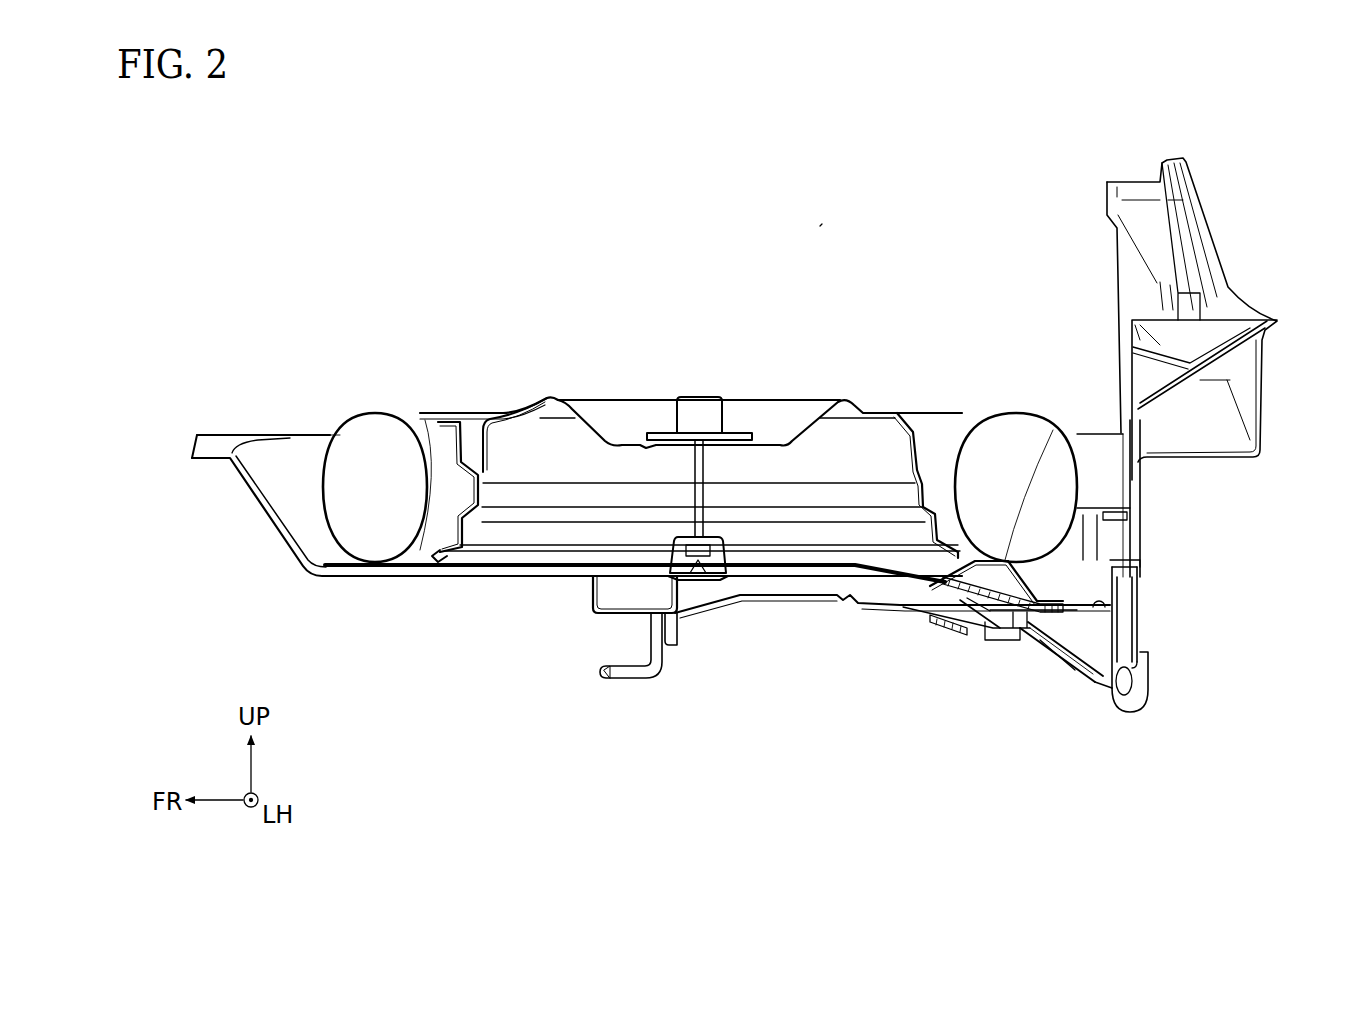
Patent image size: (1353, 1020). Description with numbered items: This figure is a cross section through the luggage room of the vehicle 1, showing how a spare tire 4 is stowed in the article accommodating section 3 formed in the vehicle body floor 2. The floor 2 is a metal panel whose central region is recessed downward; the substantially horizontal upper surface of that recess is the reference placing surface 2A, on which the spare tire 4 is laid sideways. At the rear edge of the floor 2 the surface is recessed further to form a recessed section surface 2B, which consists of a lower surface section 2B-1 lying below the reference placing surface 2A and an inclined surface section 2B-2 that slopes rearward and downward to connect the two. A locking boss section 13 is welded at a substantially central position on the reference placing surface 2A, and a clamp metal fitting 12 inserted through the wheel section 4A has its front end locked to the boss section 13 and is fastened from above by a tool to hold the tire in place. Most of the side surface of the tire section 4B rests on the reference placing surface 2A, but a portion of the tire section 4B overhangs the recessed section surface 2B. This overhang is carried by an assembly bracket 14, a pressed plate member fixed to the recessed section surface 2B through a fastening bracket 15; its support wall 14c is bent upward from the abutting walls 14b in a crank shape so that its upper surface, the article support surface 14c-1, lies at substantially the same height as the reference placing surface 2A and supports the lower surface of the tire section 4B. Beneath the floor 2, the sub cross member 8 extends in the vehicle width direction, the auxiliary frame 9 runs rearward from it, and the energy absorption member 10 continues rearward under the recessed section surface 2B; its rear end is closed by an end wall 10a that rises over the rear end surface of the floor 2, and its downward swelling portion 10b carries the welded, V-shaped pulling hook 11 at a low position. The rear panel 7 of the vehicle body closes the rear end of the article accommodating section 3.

The vehicle 1 is at (822, 224).
The vehicle body floor 2 is at (516, 568).
The reference placing surface 2A is at (437, 556).
The recessed section surface 2B is at (1090, 602).
The lower surface section 2B-1 is at (1085, 672).
The inclined surface section 2B-2 is at (968, 600).
The article accommodating section 3 is at (298, 462).
The spare tire 4 is at (962, 409).
The wheel section 4A is at (870, 407).
The tire section 4B is at (1010, 413).
The rear panel 7 is at (1232, 302).
The sub cross member 8 is at (605, 632).
The auxiliary frame 9 is at (805, 603).
The energy absorption member 10 is at (1010, 640).
The end wall 10a is at (1117, 595).
The swelling portion 10b is at (1055, 645).
The pulling hook 11 is at (1146, 655).
The clamp metal fitting 12 is at (725, 440).
The locking boss section 13 is at (680, 548).
The assembly bracket 14 is at (1043, 572).
The abutting wall 14b is at (1055, 600).
The support wall 14c is at (988, 557).
The article support surface 14c-1 is at (1013, 558).
The fastening bracket 15 is at (965, 625).